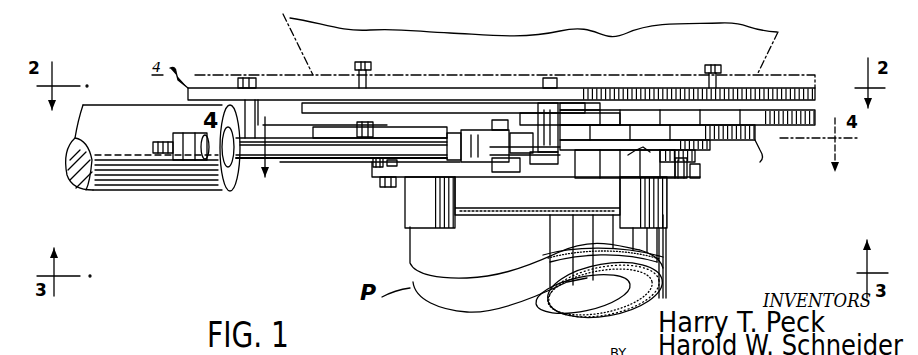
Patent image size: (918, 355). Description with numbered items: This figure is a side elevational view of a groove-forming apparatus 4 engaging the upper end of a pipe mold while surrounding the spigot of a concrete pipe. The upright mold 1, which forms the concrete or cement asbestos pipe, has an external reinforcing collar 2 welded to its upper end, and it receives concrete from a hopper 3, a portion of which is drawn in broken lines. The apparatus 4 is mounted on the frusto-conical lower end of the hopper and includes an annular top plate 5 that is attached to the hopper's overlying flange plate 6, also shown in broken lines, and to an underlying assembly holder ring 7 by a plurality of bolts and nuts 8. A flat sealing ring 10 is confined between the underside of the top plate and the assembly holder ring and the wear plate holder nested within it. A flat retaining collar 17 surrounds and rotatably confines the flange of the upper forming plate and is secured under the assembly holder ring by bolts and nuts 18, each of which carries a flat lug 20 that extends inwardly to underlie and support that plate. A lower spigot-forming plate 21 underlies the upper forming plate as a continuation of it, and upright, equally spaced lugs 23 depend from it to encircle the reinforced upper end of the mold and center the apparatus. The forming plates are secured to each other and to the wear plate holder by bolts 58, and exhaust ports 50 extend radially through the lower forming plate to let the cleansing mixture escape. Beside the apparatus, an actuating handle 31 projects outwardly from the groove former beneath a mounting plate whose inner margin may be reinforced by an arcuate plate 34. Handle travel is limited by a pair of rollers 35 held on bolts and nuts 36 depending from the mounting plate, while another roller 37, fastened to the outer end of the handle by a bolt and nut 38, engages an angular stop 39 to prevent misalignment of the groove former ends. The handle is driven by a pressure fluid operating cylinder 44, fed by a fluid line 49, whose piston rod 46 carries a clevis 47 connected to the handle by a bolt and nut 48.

The upright mold 1 is at (670, 258).
The external reinforcing collar 2 is at (545, 207).
The hopper 3 is at (790, 33).
The groove-forming apparatus 4 is at (230, 148).
The annular top plate 5 is at (815, 90).
The bottom or flange plate 6 is at (278, 78).
The assembly holder ring 7 is at (815, 112).
The bolts and nuts 8 is at (356, 66).
The sealing ring 10 is at (672, 98).
The retaining ring or collar 17 is at (770, 155).
The bolts and nuts 18 is at (692, 176).
The flat lug 20 is at (628, 157).
The lower spigot-forming plate 21 is at (370, 190).
The lugs 23 is at (408, 218).
The actuating handle 31 is at (482, 162).
The arcuate plate 34 is at (392, 100).
The rollers 35 is at (562, 148).
The bolts and nuts 36 is at (244, 80).
The roller 37 is at (554, 167).
The bolt and nut 38 is at (520, 172).
The angular stop 39 is at (535, 112).
The pressure fluid operating cylinder 44 is at (95, 192).
The piston rod 46 is at (280, 163).
The clevis 47 is at (453, 157).
The bolt and nut 48 is at (506, 170).
The fluid line 49 is at (160, 145).
The exhaust ports 50 is at (690, 165).
The bolts 58 is at (590, 176).